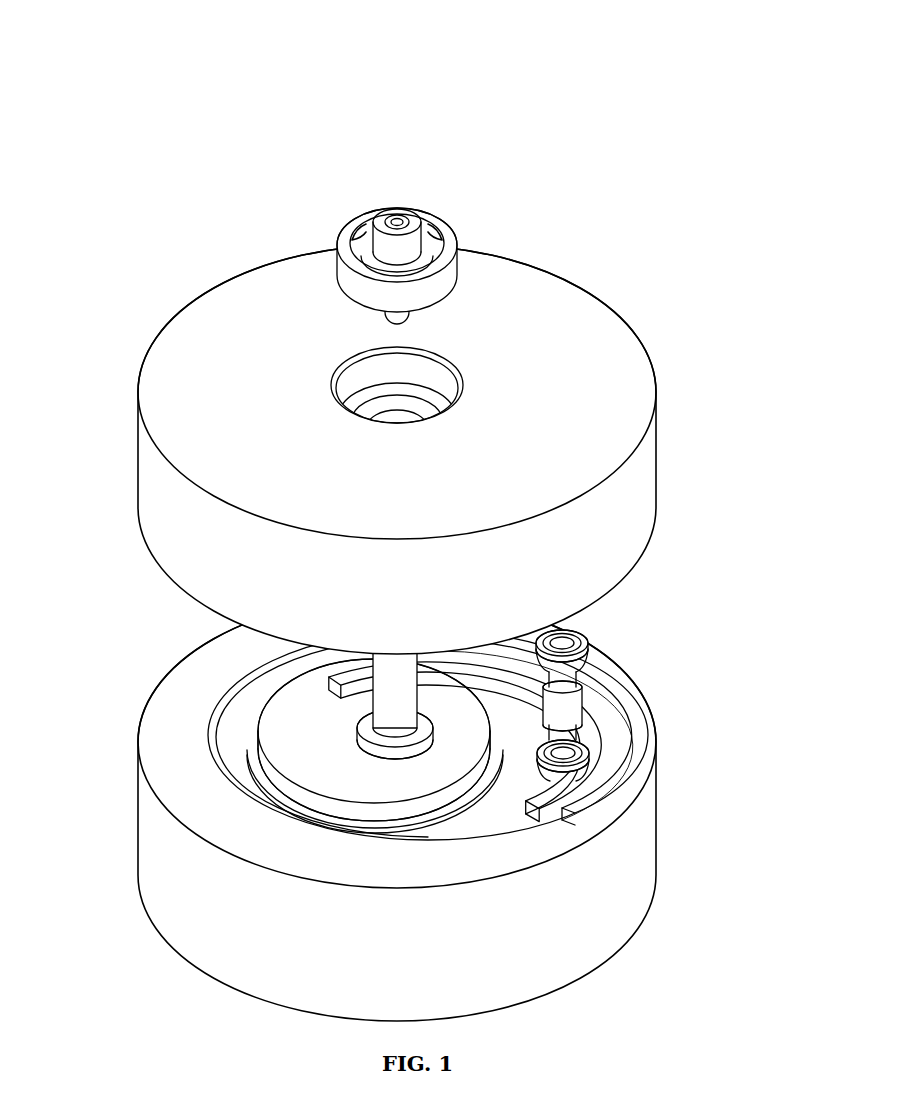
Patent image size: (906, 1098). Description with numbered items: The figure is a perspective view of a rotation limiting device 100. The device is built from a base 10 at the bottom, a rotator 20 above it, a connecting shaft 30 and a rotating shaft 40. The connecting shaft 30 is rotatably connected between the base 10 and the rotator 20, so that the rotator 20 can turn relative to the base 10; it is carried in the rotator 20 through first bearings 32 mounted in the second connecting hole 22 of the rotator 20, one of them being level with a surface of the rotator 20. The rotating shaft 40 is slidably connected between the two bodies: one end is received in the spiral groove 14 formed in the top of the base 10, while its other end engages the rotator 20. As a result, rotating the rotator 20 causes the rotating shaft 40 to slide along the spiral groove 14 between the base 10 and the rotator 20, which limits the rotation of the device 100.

The rotation limiting device 100 is at (456, 112).
The base 10 is at (176, 876).
The spiral groove 14 is at (232, 752).
The rotator 20 is at (574, 306).
The second connecting hole 22 is at (365, 373).
The connecting shaft 30 is at (390, 690).
The first bearing 32 is at (352, 222).
The rotating shaft 40 is at (565, 713).